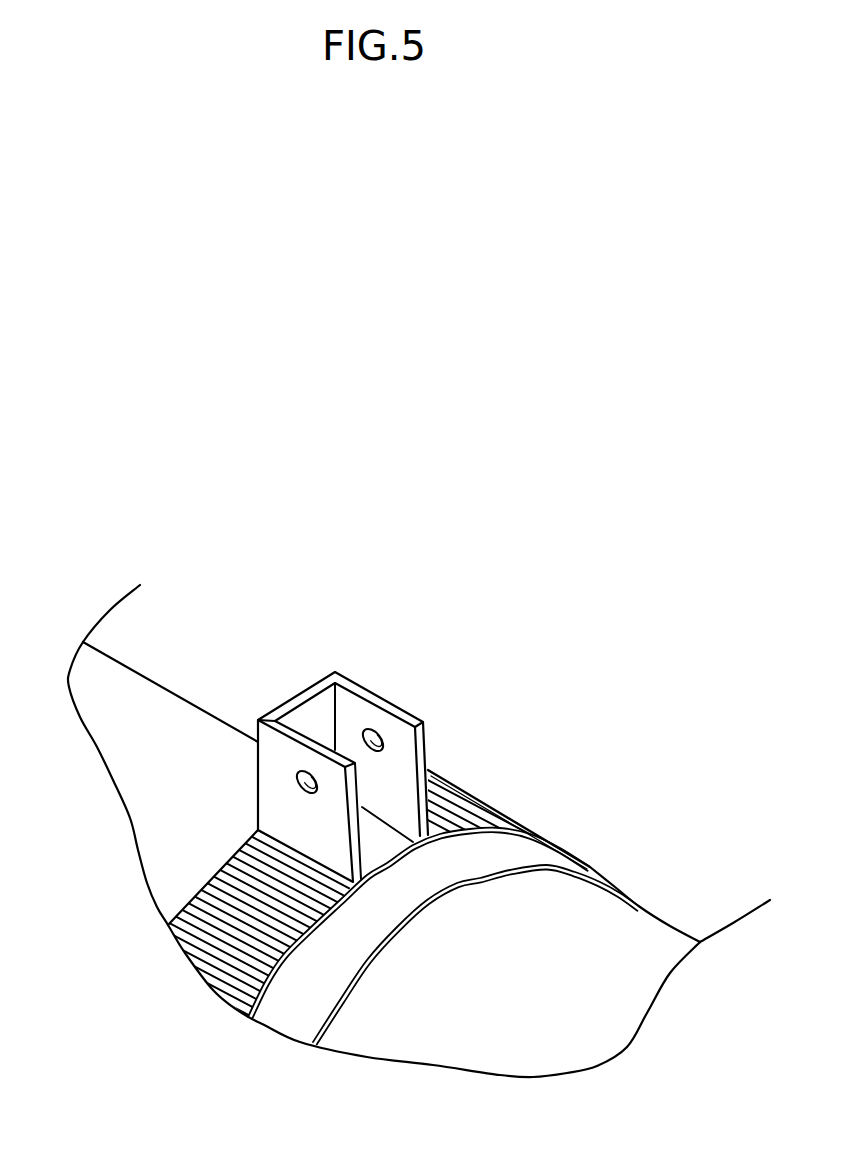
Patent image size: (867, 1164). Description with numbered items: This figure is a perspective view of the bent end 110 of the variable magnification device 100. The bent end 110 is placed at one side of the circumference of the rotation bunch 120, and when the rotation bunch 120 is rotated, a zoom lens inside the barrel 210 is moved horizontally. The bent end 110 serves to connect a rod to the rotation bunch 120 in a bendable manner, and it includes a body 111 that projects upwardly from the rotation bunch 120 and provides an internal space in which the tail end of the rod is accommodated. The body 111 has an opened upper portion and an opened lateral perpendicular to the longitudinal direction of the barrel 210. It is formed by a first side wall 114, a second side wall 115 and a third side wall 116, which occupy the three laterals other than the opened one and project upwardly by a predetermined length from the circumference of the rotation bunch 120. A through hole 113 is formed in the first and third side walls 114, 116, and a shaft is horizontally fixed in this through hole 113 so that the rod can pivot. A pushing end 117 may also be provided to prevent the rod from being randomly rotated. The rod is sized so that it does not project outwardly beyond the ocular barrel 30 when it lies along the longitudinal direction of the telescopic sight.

The variable magnification device 100 is at (612, 703).
The ocular barrel 30 is at (663, 933).
The barrel 210 is at (138, 675).
The bent end 110 is at (306, 628).
The body 111 is at (438, 752).
The through hole 113 is at (297, 793).
The first side wall 114 is at (392, 703).
The second side wall 115 is at (292, 698).
The third side wall 116 is at (270, 778).
The pushing end 117 is at (373, 837).
The rotation bunch 120 is at (207, 953).